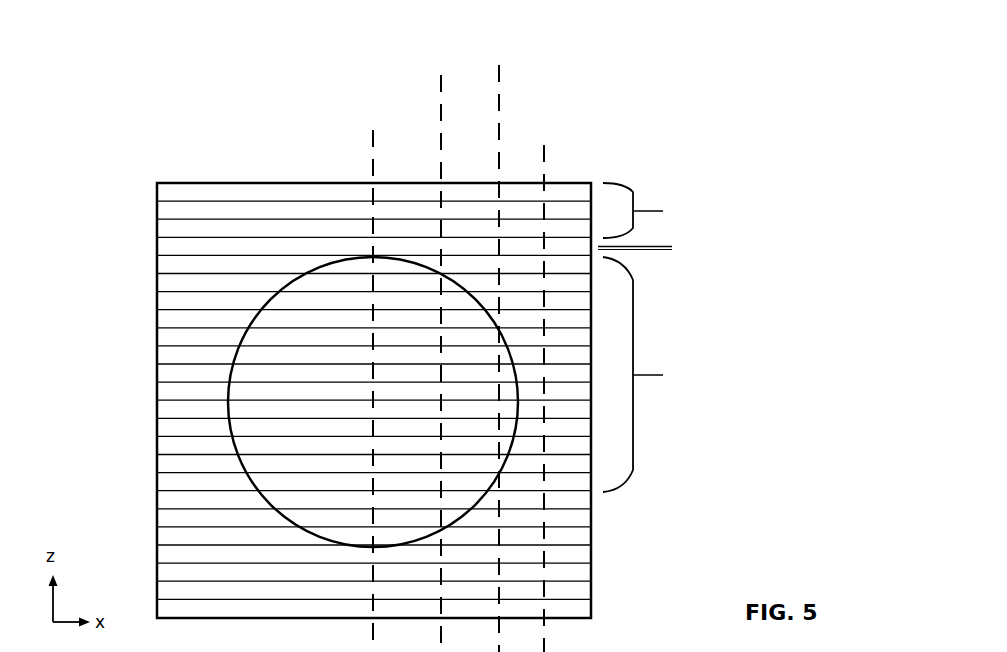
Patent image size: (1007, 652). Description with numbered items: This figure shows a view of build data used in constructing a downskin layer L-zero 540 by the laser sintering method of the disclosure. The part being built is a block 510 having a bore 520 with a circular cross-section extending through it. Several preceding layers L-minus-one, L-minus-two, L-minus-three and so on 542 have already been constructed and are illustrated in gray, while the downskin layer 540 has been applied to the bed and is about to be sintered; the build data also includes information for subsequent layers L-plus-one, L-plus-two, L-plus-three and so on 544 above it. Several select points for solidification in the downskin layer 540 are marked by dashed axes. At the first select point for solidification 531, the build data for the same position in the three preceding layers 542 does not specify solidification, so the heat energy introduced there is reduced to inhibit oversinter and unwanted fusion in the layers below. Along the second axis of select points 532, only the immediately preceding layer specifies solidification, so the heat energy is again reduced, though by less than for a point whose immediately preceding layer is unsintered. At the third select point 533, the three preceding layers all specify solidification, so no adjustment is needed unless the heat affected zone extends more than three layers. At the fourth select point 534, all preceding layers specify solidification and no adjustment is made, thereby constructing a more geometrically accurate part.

The block 510 is at (126, 236).
The bore 520 is at (265, 393).
The select point for solidification (x1, y1, zn) 531 is at (263, 105).
The select points along the axis (x2, y2, zn) 532 is at (328, 58).
The select point at (x3, y3, L0) 533 is at (508, 62).
The select point at (x4, y4, L0) 534 is at (662, 110).
The downskin layer L0 540 is at (718, 258).
The previously constructed layers L-1, L-2, L-3 542 is at (790, 395).
The subsequent layers L+1, L+2, L+3 544 is at (797, 195).